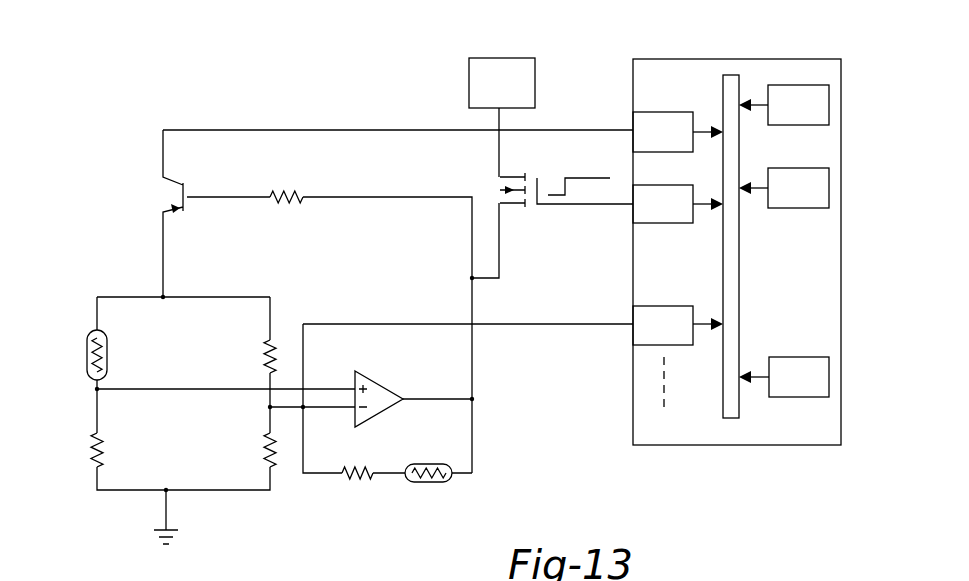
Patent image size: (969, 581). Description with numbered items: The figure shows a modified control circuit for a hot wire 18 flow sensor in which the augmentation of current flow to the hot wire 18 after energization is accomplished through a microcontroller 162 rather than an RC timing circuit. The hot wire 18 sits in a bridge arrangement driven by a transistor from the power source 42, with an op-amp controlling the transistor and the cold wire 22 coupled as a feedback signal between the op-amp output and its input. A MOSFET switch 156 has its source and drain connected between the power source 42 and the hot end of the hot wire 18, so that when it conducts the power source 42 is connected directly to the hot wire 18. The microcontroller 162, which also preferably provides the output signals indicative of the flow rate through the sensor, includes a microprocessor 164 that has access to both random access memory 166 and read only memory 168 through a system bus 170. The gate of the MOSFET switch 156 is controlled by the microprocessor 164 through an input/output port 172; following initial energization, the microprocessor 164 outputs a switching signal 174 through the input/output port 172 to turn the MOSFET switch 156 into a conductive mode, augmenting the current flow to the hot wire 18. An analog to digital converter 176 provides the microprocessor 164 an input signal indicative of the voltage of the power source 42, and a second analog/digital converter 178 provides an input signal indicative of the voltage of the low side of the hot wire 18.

The hot wire 18 is at (87, 353).
The cold wire 22 is at (430, 482).
The power source 42 is at (511, 95).
The MOSFET switch 156 is at (498, 187).
The microcontroller 162 is at (841, 418).
The microprocessor 164 is at (829, 185).
The random access memory 166 is at (829, 103).
The read only memory 168 is at (829, 378).
The system bus 170 is at (732, 75).
The input/output port 172 is at (633, 220).
The switching signal 174 is at (583, 178).
The analog to digital converter 176 is at (652, 112).
The second analog/digital converter 178 is at (633, 342).